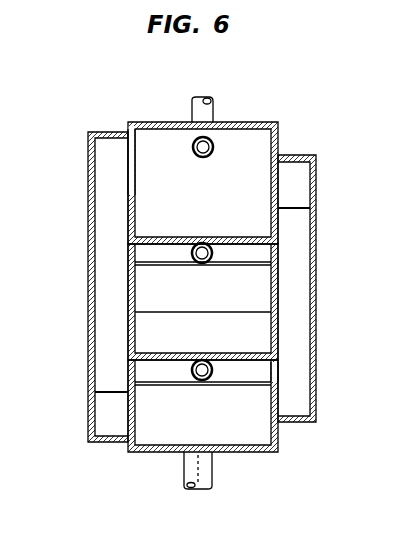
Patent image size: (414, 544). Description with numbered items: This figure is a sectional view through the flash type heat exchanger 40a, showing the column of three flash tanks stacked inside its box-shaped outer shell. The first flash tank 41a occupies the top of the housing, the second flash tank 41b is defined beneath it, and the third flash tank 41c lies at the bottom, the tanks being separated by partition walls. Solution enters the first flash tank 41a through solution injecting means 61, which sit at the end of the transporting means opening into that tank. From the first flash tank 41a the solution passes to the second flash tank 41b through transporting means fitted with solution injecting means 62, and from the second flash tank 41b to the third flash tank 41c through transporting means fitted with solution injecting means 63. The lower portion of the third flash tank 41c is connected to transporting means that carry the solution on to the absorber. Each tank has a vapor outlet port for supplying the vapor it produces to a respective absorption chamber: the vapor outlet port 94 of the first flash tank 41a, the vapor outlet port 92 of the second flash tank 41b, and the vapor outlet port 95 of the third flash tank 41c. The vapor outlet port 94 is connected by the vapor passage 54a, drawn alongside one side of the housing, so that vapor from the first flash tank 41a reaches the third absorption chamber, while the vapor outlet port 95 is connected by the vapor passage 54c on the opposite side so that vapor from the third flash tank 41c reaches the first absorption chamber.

The flash type heat exchanger 40a is at (243, 114).
The first flash tank 41a is at (235, 172).
The second flash tank 41b is at (150, 334).
The third flash tank 41c is at (240, 430).
The vapor passage 54a is at (102, 298).
The vapor passage 54c is at (303, 301).
The solution injecting means 61 is at (192, 148).
The solution injecting means 62 is at (196, 252).
The solution injecting means 63 is at (196, 376).
The vapor outlet port 92 is at (208, 304).
The vapor outlet port 94 is at (130, 167).
The vapor outlet port 95 is at (272, 371).